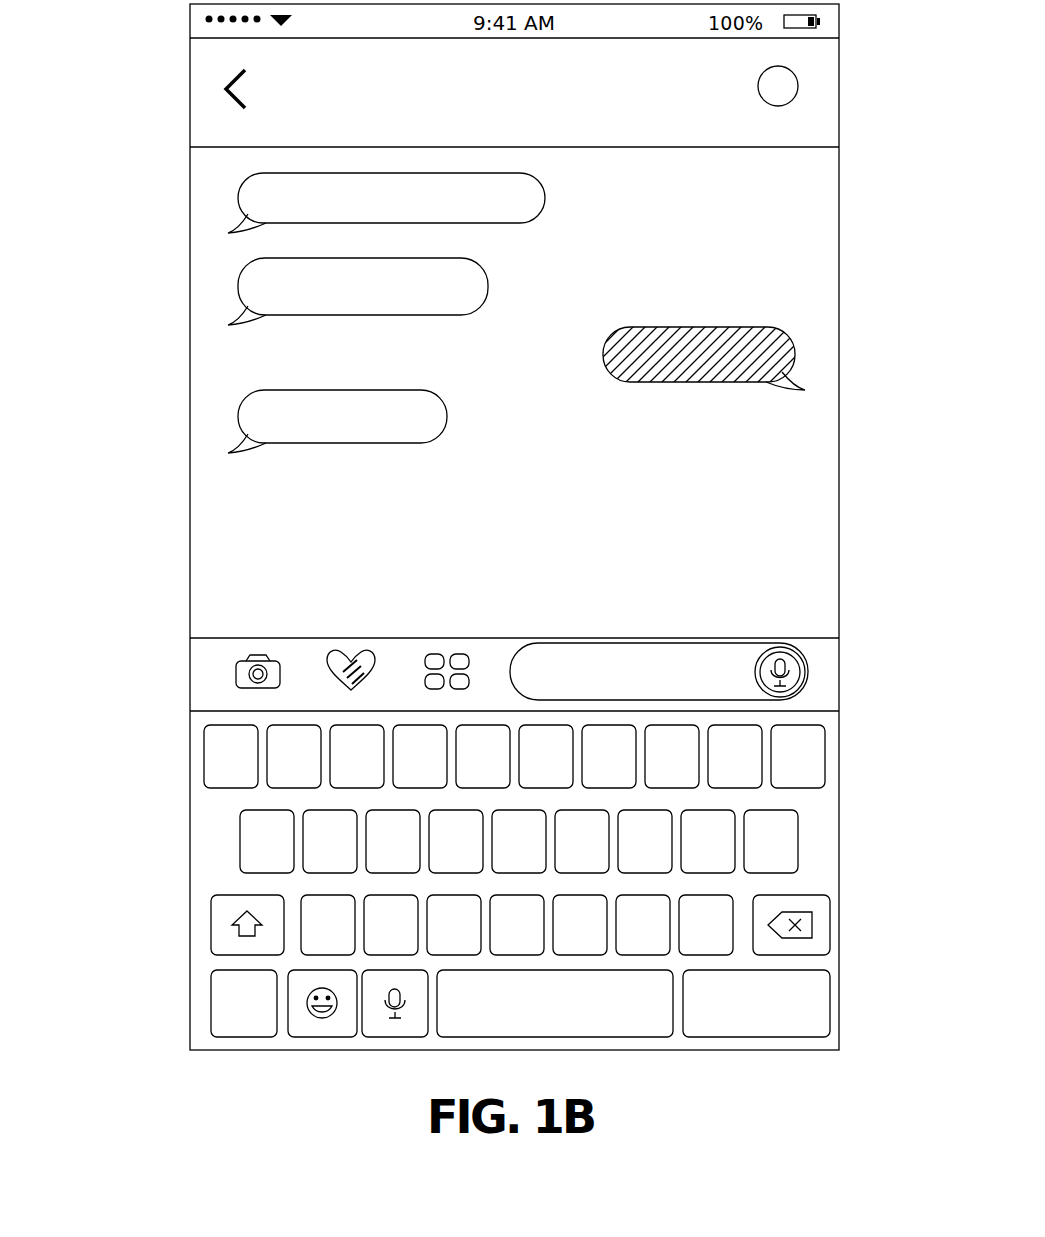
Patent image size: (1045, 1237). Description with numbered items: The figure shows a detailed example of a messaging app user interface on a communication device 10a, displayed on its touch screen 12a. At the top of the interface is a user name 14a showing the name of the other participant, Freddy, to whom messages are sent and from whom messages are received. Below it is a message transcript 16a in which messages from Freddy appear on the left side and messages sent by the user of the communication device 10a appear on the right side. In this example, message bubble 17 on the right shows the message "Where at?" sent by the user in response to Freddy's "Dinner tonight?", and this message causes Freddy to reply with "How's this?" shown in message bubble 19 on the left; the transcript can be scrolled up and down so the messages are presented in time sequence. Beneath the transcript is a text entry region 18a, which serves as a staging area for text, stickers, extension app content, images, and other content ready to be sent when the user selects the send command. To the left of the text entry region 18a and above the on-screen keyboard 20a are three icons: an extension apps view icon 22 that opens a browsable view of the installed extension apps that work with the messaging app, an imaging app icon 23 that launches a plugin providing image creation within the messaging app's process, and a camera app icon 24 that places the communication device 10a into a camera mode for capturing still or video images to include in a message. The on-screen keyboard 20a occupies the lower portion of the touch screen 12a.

The communication device 10a is at (156, 301).
The touch screen 12a is at (190, 418).
The user name 14a is at (563, 127).
The message transcript 16a is at (675, 283).
The message bubble 17 is at (730, 383).
The text entry region 18a is at (745, 642).
The message bubble 19 is at (307, 441).
The on-screen keyboard 20a is at (817, 837).
The extension apps view icon 22 is at (432, 653).
The imaging app icon 23 is at (328, 653).
The camera app icon 24 is at (240, 683).